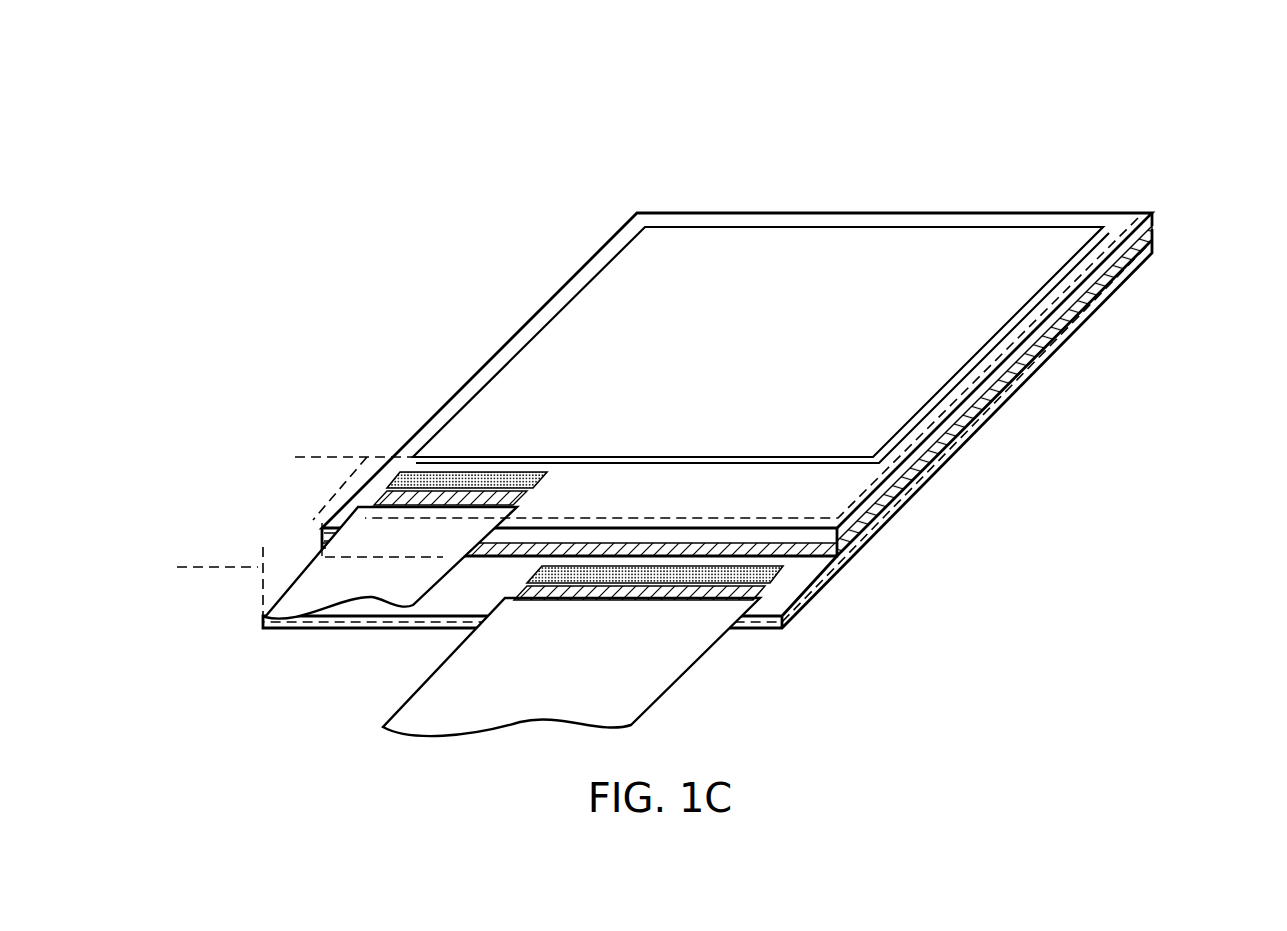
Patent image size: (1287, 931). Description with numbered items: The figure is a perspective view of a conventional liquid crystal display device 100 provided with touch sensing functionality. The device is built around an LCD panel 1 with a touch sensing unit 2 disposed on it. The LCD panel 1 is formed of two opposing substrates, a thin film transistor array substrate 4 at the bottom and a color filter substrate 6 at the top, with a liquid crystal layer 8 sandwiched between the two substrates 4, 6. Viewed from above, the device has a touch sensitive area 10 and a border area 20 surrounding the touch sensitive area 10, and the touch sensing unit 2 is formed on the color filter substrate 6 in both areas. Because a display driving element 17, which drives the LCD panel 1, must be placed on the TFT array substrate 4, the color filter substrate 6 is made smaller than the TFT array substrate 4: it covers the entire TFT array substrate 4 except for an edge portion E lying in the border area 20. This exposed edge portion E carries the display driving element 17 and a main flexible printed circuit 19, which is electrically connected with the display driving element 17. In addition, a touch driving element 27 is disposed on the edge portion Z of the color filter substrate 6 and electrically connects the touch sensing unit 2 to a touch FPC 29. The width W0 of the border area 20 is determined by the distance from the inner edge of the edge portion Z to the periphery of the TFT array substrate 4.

The liquid crystal display device 100 is at (701, 394).
The LCD panel 1 is at (766, 340).
The touch sensing unit 2 is at (1130, 212).
The color filter substrate 6 is at (1152, 227).
The liquid crystal layer 8 is at (1152, 236).
The thin film transistor array substrate 4 is at (744, 434).
The touch sensitive area 10 is at (816, 276).
The border area 20 is at (940, 213).
The touch driving element 27 is at (465, 472).
The display driving element 17 is at (688, 588).
The main flexible printed circuit 19 is at (445, 687).
The touch FPC 29 is at (318, 592).
The edge portion of the color filter substrate Z is at (905, 490).
The edge portion of the TFT array substrate E is at (815, 590).
The width of the border area W0 is at (195, 568).